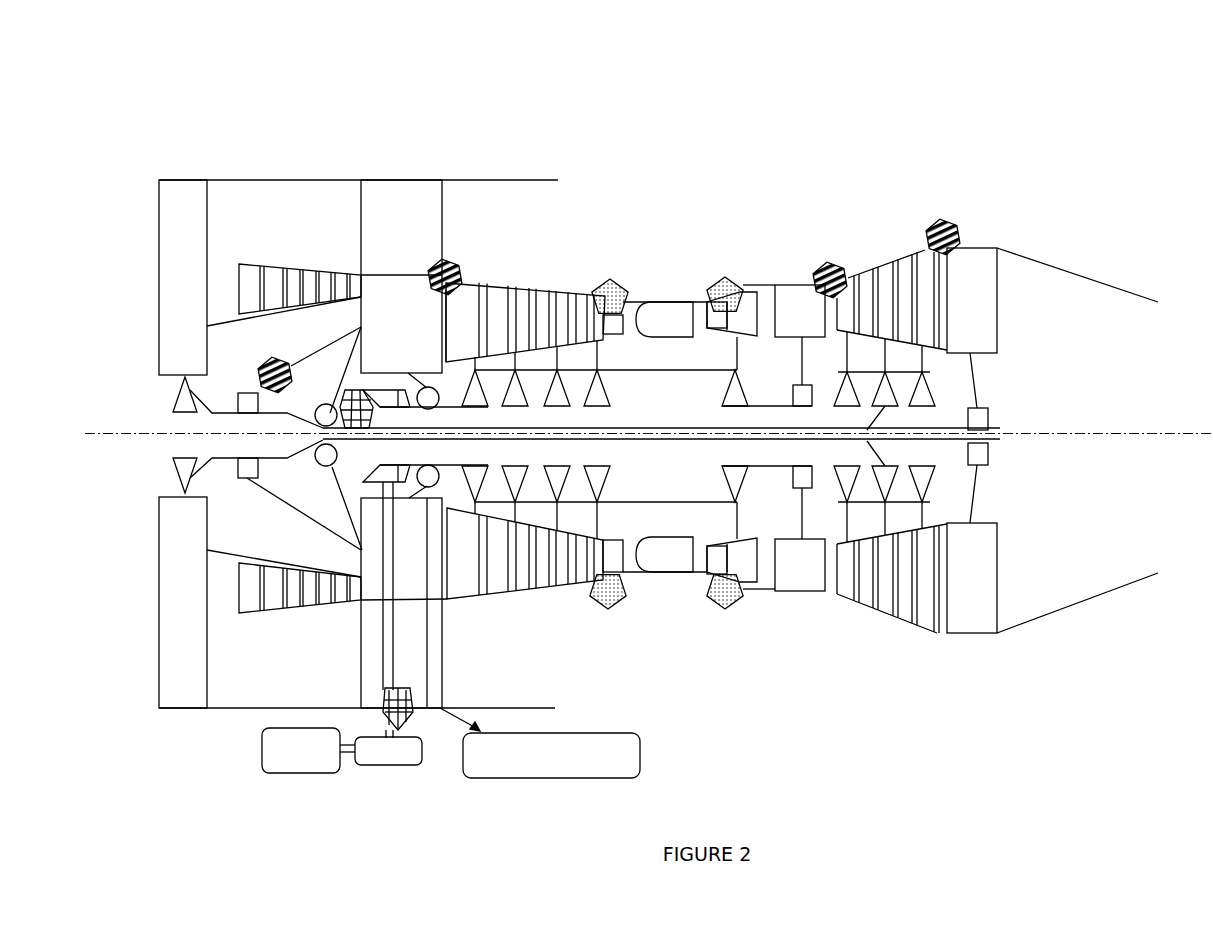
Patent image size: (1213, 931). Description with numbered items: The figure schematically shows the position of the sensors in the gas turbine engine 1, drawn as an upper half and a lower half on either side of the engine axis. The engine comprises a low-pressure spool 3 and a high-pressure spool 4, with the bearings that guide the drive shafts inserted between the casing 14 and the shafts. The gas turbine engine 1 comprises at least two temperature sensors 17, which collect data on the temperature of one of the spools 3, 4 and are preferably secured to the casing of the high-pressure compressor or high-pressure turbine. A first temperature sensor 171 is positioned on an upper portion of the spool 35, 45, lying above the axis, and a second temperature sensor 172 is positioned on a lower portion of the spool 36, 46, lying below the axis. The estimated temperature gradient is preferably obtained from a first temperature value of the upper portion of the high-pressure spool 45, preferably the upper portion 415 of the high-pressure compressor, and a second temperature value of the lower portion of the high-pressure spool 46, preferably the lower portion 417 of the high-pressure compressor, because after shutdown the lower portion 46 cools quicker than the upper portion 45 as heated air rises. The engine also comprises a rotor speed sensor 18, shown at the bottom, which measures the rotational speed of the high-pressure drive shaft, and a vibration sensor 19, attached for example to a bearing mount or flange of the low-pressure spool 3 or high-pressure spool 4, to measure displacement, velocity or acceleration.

The gas turbine engine 1 is at (970, 106).
The casing 14 is at (300, 272).
The upper portion of the high-pressure compressor 415 is at (577, 245).
The upper portion of the high-pressure spool 45 is at (600, 253).
The temperature sensors 17 is at (610, 278).
The first temperature sensor 171 is at (613, 278).
The second temperature sensor 172 is at (612, 612).
The vibration sensor 19 is at (831, 262).
The upper portion of the low-pressure spool 35 is at (902, 223).
The high-pressure spool 4 is at (722, 525).
The low-pressure spool 3 is at (817, 457).
The lower portion of the low-pressure spool 36 is at (963, 660).
The rotor speed sensor 18 is at (393, 732).
The lower portion of the high-pressure compressor 417 is at (476, 654).
The lower portion of the high-pressure spool 46 is at (568, 609).